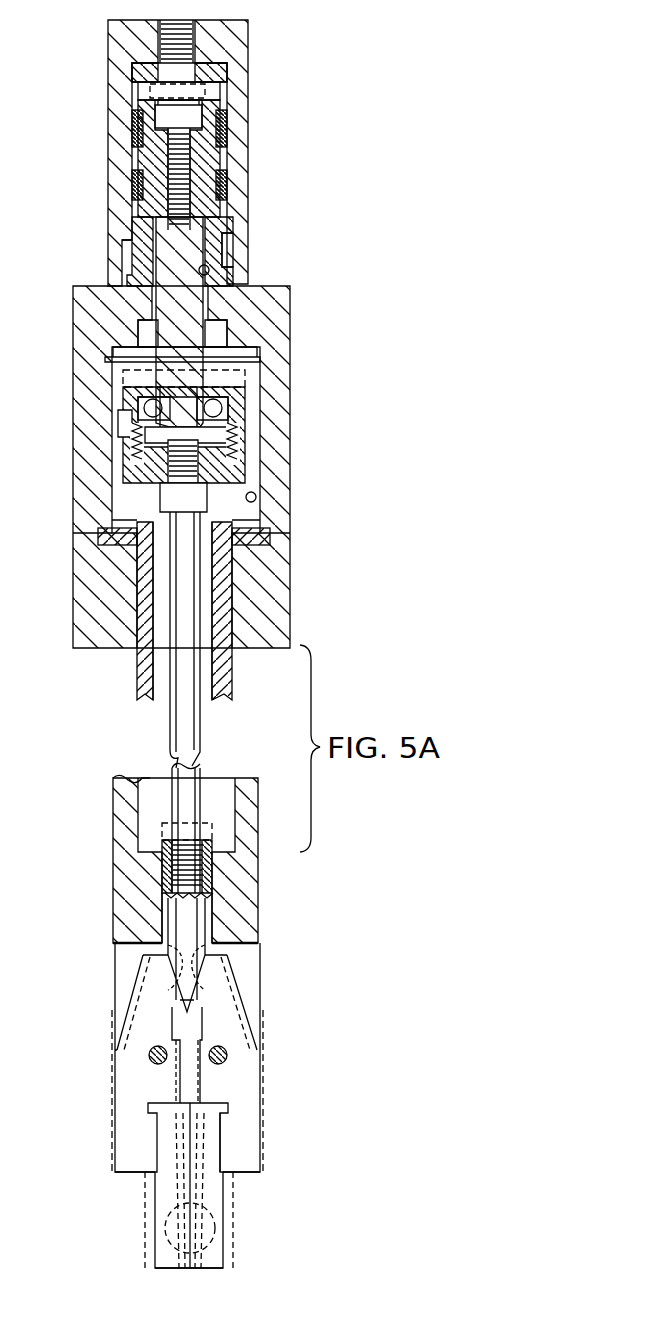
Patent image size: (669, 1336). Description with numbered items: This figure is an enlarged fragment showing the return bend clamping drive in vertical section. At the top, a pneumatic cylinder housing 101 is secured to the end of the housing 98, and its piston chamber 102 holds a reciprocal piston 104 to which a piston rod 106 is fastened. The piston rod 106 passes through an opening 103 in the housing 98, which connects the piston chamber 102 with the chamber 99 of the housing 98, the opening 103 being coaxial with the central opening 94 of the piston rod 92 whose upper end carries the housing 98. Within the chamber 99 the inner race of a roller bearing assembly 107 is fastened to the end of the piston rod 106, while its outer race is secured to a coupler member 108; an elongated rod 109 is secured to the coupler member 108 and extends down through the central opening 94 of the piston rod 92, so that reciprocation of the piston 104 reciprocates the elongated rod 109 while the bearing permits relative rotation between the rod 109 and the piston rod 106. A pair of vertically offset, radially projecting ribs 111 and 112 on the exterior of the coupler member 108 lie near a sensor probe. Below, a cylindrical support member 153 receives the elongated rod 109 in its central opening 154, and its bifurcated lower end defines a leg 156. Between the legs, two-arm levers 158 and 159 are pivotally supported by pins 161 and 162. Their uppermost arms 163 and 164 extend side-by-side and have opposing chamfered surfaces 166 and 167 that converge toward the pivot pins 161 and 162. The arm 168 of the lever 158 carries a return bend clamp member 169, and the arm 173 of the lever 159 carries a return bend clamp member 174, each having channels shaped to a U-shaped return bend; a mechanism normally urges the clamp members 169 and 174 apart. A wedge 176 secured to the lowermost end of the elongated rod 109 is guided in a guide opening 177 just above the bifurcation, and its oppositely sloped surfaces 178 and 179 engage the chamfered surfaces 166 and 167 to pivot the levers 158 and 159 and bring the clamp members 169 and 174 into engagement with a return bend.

The pneumatic cylinder housing 101 is at (252, 185).
The piston chamber 102 is at (227, 217).
The opening 103 is at (205, 277).
The reciprocal piston 104 is at (215, 152).
The piston rod 106 is at (193, 332).
The roller bearing assembly 107 is at (222, 408).
The coupler member 108 is at (235, 458).
The elongated rod 109 is at (185, 578).
The rib 111 is at (235, 403).
The rib 112 is at (120, 427).
The housing 98 is at (294, 427).
The chamber 99 is at (254, 497).
The piston rod 92 is at (222, 630).
The central opening 94 is at (203, 685).
The central opening 154 is at (150, 790).
The cylindrical support member 153 is at (248, 868).
The guide opening 177 is at (168, 867).
The wedge 176 is at (177, 913).
The chamfered surface 166 is at (172, 943).
The chamfered surface 167 is at (193, 947).
The leg 156 is at (243, 960).
The uppermost arm 163 is at (147, 1000).
The uppermost arm 164 is at (227, 993).
The sloped surface 178 is at (175, 1006).
The sloped surface 179 is at (203, 1004).
The pin 161 is at (148, 1057).
The pin 162 is at (227, 1050).
The two-arm lever 159 is at (248, 1075).
The two-arm lever 158 is at (127, 1068).
The arm 168 is at (127, 1160).
The arm 173 is at (242, 1155).
The return bend clamp member 174 is at (215, 1253).
The return bend clamp member 169 is at (167, 1255).